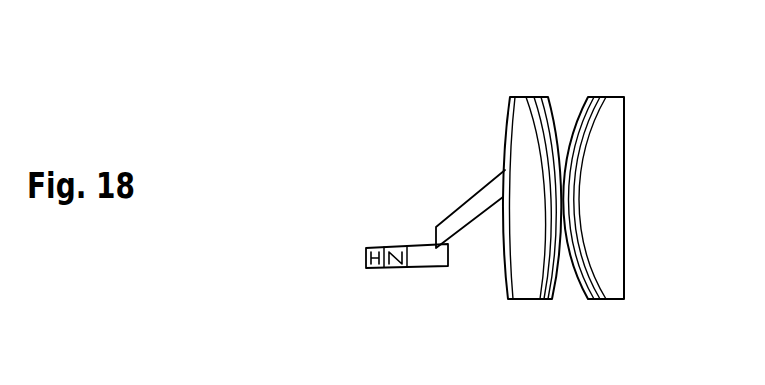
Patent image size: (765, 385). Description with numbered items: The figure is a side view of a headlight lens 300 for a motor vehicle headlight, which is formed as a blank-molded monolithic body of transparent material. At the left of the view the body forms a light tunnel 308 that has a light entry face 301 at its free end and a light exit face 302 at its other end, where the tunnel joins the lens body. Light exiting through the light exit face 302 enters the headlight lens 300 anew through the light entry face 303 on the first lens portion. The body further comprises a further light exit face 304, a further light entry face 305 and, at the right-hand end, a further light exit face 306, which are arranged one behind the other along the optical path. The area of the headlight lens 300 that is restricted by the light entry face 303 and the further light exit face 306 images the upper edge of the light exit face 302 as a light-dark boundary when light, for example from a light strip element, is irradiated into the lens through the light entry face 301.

The headlight lens 300 is at (403, 287).
The light entry face 301 is at (365, 258).
The light exit face 302 is at (448, 250).
The light entry face 303 is at (503, 270).
The further light exit face 304 is at (553, 282).
The further light entry face 305 is at (575, 118).
The further light exit face 306 is at (624, 195).
The light tunnel 308 is at (403, 243).